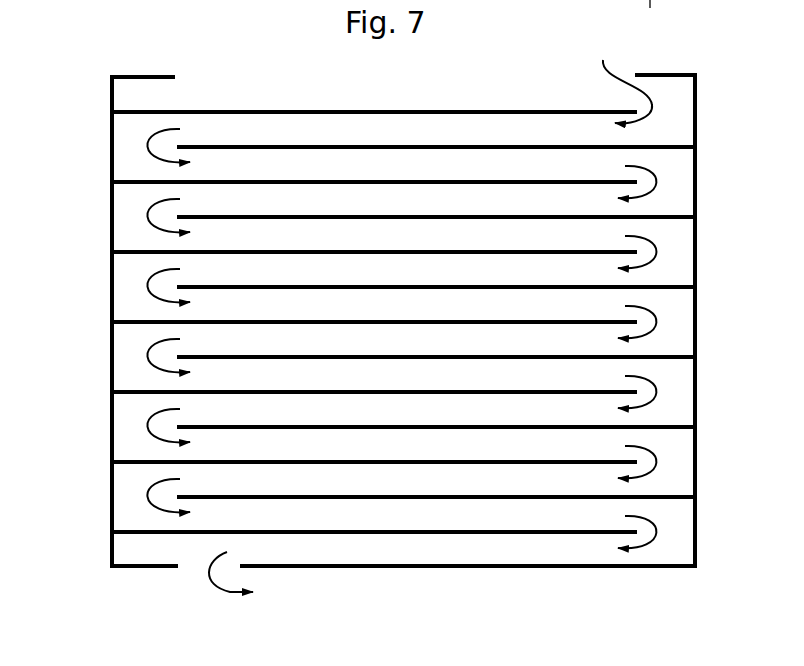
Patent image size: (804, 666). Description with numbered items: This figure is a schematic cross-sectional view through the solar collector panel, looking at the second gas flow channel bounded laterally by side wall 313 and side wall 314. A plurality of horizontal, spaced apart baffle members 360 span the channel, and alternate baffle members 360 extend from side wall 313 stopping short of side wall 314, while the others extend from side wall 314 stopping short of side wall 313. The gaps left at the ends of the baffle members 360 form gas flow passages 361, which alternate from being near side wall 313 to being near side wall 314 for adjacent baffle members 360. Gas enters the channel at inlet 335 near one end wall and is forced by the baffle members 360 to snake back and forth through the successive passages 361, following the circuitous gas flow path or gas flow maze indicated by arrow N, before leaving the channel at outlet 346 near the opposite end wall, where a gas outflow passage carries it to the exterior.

The side wall 313 is at (113, 322).
The side wall 314 is at (697, 123).
The inlet of second gas flow channel 335 is at (526, 86).
The baffle members 360 is at (677, 217).
The gas flow passages 361 is at (663, 298).
The outlet of second gas flow channel 346 is at (190, 570).
The arrow indicating gas flow path N is at (606, 61).